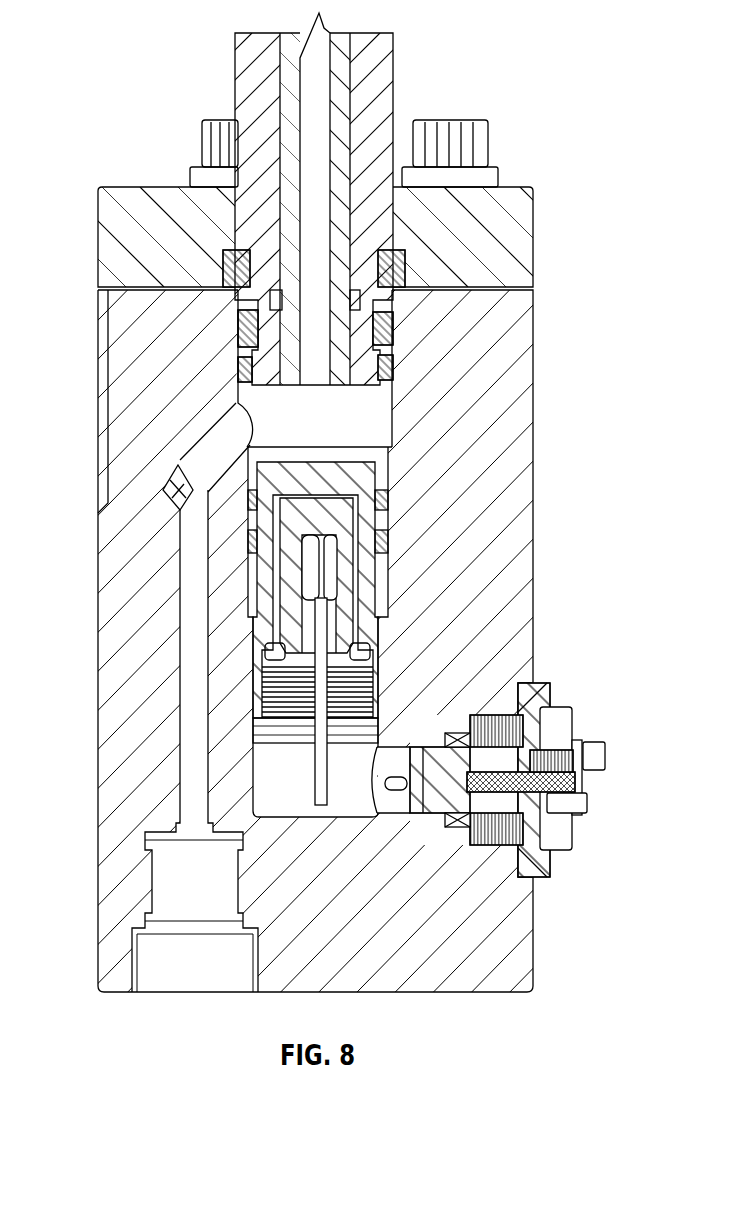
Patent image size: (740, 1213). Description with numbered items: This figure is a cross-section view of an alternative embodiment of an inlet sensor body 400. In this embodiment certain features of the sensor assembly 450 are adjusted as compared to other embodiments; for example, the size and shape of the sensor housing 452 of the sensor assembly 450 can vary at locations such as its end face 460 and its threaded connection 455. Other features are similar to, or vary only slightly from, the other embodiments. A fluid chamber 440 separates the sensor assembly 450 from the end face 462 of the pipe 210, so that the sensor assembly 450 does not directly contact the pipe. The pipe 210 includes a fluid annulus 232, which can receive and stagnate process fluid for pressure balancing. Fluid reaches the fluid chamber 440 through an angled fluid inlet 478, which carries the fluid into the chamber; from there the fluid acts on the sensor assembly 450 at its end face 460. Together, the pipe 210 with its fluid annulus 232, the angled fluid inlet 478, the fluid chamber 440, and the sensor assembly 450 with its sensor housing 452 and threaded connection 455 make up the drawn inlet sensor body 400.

The inlet sensor body 400 is at (566, 132).
The pipe 210 is at (382, 82).
The fluid annulus 232 is at (348, 33).
The fluid chamber 440 is at (360, 403).
The end face 460 is at (357, 455).
The end face 462 is at (292, 387).
The angled fluid inlet 478 is at (170, 493).
The sensor assembly 450 is at (380, 487).
The sensor housing 452 is at (372, 612).
The threaded connection 455 is at (372, 680).